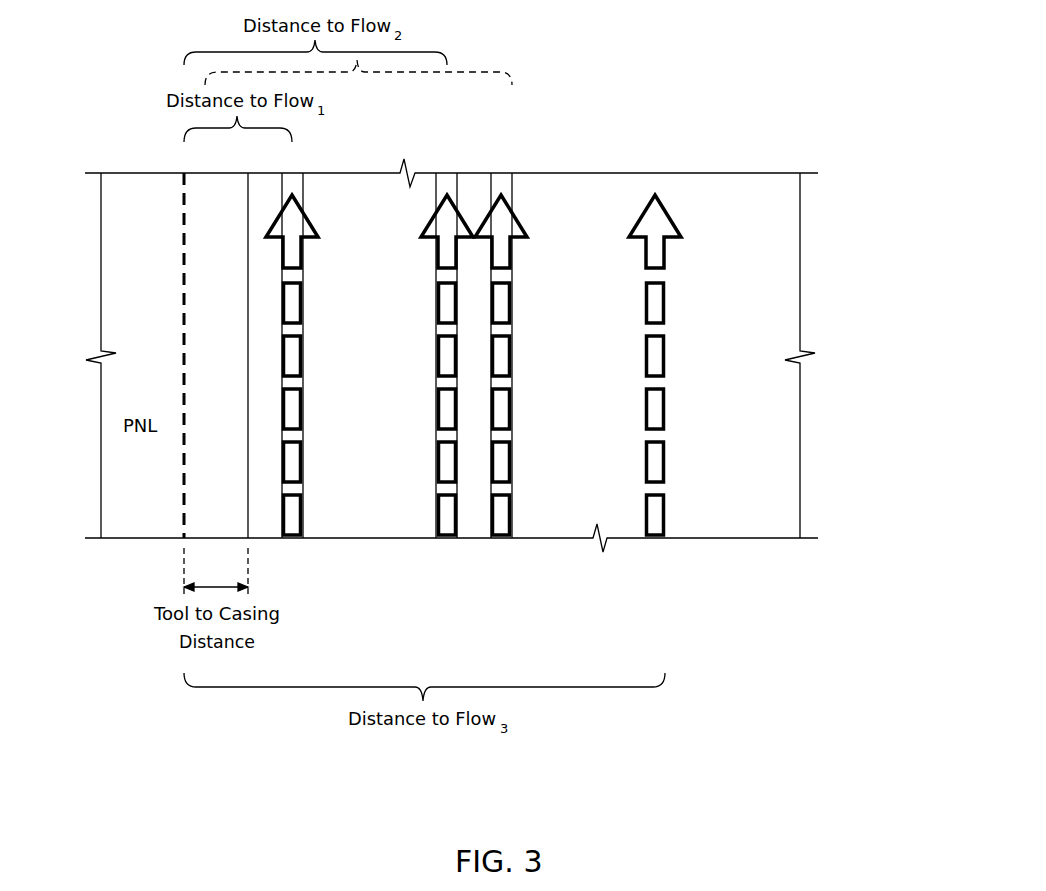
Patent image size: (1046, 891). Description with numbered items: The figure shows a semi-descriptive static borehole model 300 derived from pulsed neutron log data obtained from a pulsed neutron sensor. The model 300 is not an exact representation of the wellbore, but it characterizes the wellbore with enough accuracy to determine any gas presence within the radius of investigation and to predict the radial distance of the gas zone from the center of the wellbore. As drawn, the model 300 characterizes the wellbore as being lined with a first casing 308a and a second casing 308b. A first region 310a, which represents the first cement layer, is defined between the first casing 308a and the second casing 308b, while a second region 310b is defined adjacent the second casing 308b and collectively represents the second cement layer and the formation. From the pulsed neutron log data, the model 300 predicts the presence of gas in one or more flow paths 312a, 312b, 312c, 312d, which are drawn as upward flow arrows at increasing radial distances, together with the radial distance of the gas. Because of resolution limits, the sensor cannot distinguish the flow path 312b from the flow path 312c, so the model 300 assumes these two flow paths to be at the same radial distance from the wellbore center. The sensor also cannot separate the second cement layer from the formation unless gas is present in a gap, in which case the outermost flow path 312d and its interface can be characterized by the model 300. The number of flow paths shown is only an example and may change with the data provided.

The semi-descriptive static borehole model 300 is at (811, 47).
The first casing 308a is at (265, 530).
The second casing 308b is at (474, 536).
The first region 310a is at (390, 277).
The second region 310b is at (761, 237).
The flow path 312a is at (300, 538).
The flow path 312b is at (437, 477).
The flow path 312c is at (510, 477).
The flow path 312d is at (663, 512).